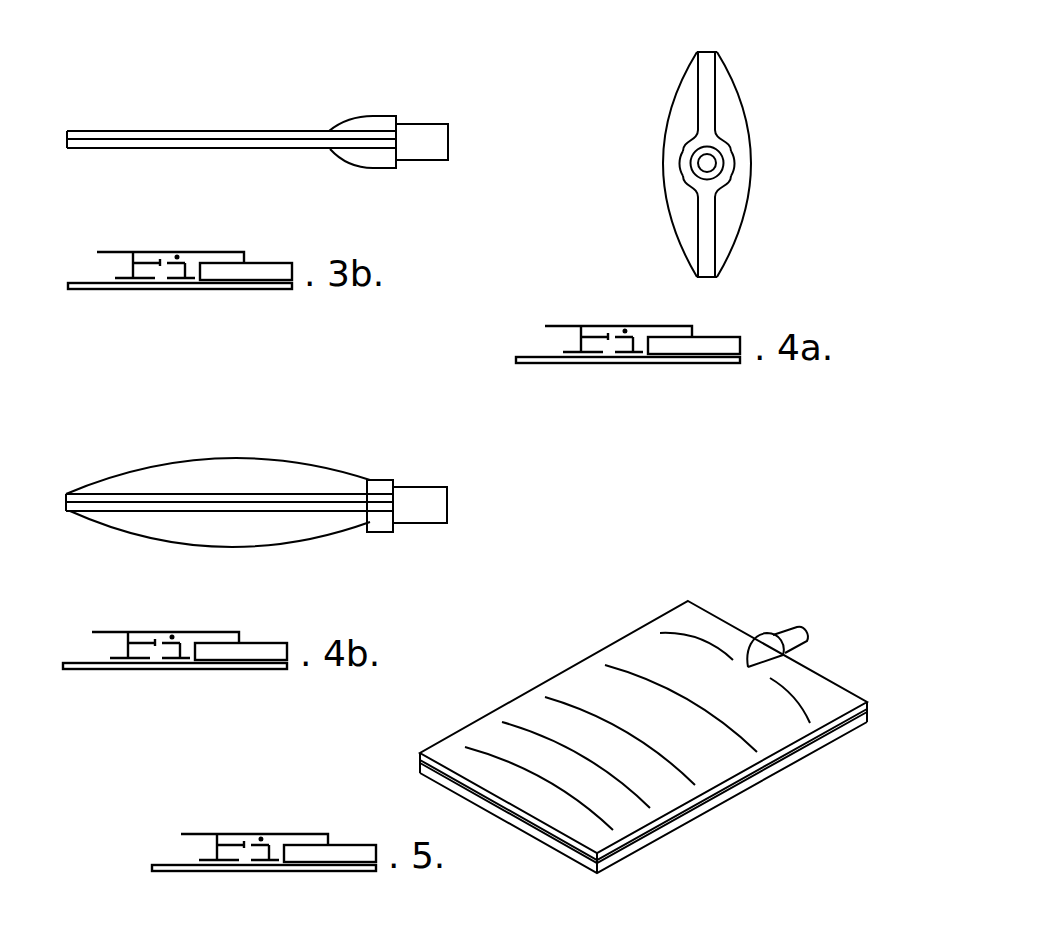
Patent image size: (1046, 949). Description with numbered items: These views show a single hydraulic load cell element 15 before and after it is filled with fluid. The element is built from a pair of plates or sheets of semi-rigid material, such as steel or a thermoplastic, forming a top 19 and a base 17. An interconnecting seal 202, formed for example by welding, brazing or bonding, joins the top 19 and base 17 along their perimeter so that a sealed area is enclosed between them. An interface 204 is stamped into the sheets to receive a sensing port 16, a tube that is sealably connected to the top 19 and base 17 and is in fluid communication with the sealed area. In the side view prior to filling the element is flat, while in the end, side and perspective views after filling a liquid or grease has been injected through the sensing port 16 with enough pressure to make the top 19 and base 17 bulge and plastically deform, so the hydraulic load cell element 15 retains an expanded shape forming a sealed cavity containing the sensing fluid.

In FIG. 3B, the hydraulic load cell element 15 is at (434, 95).
In FIG. 4A, the hydraulic load cell element 15 is at (758, 58).
In FIG. 4B, the hydraulic load cell element 15 is at (100, 438).
In FIG. 5, the hydraulic load cell element 15 is at (658, 598).
In FIG. 3B, the sensing port 16 is at (437, 155).
In FIG. 4A, the sensing port 16 is at (719, 172).
In FIG. 4B, the sensing port 16 is at (436, 515).
In FIG. 5, the sensing port 16 is at (803, 638).
In FIG. 3B, the base 17 is at (166, 150).
In FIG. 4A, the base 17 is at (746, 116).
In FIG. 4B, the base 17 is at (145, 541).
In FIG. 5, the base 17 is at (717, 802).
In FIG. 3B, the top 19 is at (110, 129).
In FIG. 4A, the top 19 is at (675, 230).
In FIG. 4B, the top 19 is at (212, 458).
In FIG. 5, the top 19 is at (783, 739).
In FIG. 3B, the interconnecting seal 202 is at (76, 148).
In FIG. 4A, the interconnecting seal 202 is at (703, 50).
In FIG. 4B, the interconnecting seal 202 is at (65, 506).
In FIG. 5, the interconnecting seal 202 is at (443, 775).
In FIG. 3B, the interface 204 is at (357, 125).
In FIG. 4B, the interface 204 is at (375, 478).
In FIG. 5, the interface 204 is at (765, 643).